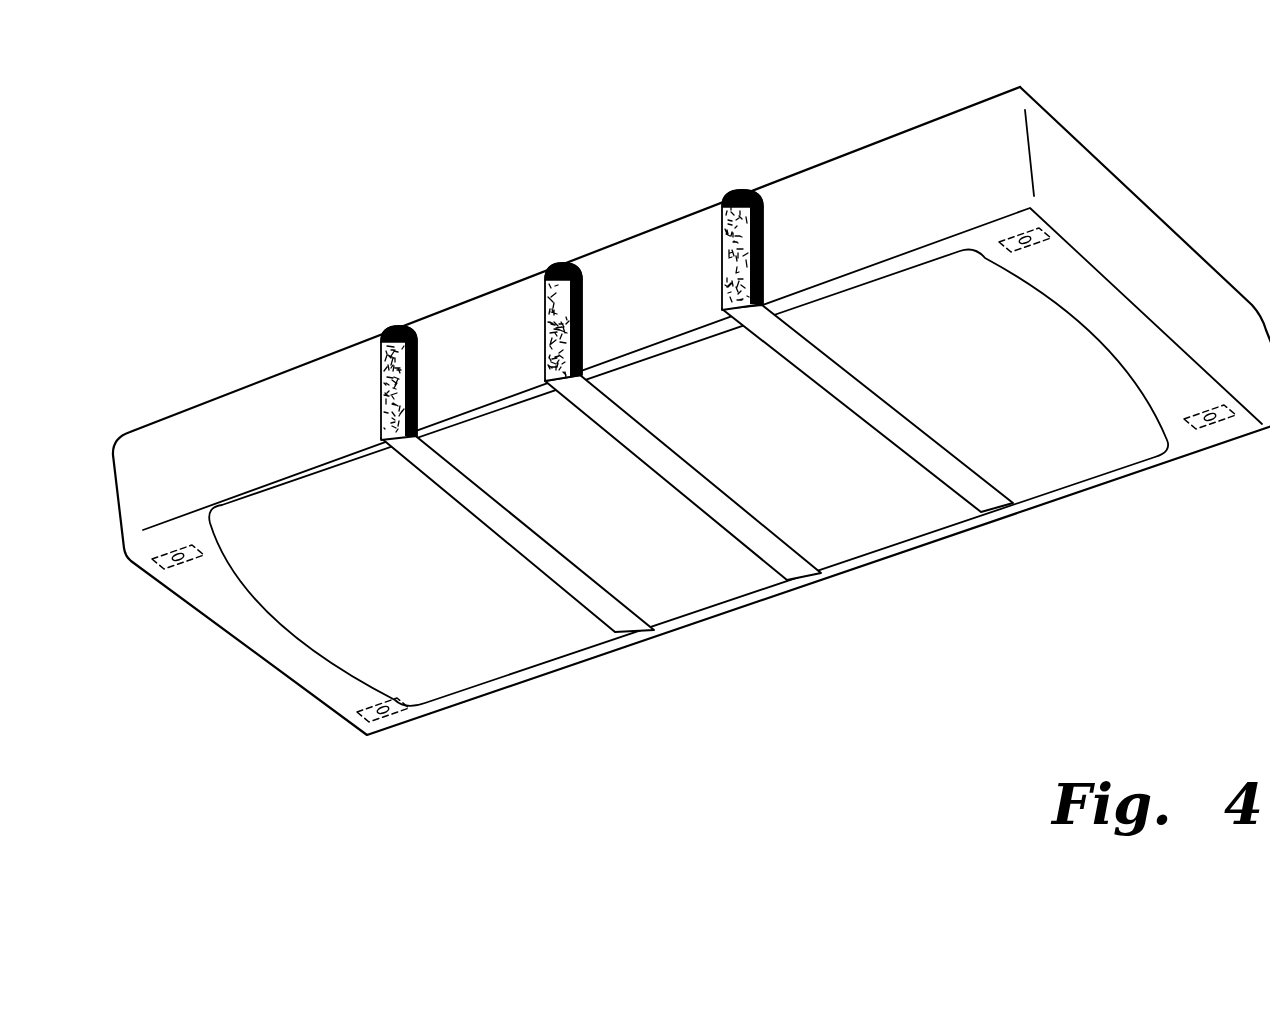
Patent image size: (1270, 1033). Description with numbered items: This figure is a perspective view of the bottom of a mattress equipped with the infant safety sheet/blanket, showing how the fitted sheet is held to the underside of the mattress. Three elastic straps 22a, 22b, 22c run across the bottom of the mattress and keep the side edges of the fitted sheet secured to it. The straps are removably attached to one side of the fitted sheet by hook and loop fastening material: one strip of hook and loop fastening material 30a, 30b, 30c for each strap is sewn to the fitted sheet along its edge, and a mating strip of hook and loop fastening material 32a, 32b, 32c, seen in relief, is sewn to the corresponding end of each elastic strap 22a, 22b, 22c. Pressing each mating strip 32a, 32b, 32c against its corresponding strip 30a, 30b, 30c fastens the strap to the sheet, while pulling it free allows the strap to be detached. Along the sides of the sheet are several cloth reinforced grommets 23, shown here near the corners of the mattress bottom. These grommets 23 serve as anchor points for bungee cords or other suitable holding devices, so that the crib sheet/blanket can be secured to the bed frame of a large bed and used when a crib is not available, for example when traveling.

The elastic strap 22a is at (617, 620).
The elastic strap 22b is at (797, 570).
The elastic strap 22c is at (980, 507).
The cloth reinforced grommet 23 is at (177, 567).
The strip of hook and loop fastening material 30a is at (417, 336).
The strip of hook and loop fastening material 30b is at (581, 268).
The strip of hook and loop fastening material 30c is at (763, 200).
The mating strip of hook and loop fastening material 32a is at (382, 390).
The mating strip of hook and loop fastening material 32b is at (544, 324).
The mating strip of hook and loop fastening material 32c is at (721, 258).